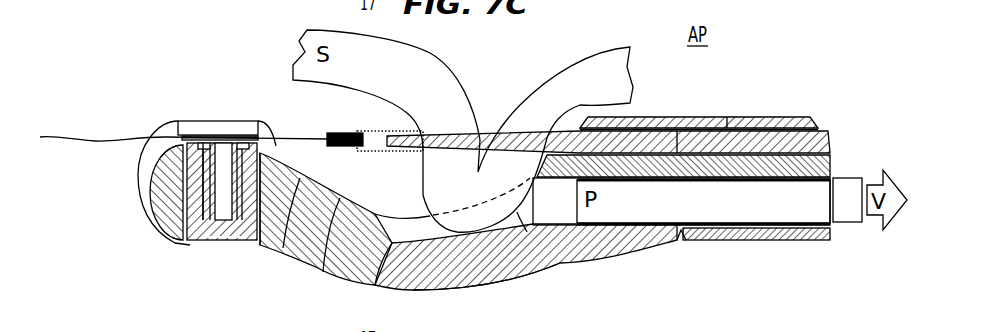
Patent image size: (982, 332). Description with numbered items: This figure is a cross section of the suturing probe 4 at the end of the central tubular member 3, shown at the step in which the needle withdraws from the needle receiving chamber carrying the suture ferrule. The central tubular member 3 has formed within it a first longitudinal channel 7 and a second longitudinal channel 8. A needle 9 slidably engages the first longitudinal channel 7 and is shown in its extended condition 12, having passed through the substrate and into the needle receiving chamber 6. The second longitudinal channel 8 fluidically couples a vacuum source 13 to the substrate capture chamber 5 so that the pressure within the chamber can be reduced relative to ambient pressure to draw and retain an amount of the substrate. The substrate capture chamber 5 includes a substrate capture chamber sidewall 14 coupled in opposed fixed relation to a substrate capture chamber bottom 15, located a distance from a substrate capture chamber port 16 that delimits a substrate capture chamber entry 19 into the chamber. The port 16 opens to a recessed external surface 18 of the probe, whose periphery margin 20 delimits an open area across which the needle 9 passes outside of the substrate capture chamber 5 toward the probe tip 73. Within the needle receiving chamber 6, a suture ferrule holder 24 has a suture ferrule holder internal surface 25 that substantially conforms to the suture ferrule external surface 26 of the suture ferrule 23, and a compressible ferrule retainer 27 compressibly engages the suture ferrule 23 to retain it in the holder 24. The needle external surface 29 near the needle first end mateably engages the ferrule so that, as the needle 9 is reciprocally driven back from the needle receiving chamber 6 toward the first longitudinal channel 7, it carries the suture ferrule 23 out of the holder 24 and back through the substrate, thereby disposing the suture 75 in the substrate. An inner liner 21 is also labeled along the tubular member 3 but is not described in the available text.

The suturing probe 4 is at (60, 61).
The suture 75 is at (70, 137).
The suture ferrule holder internal surface 25 is at (188, 127).
The needle receiving chamber 6 is at (212, 98).
The periphery margin 20 is at (258, 127).
The suture ferrule 23 is at (333, 137).
The suture ferrule external surface 26 is at (420, 138).
The first longitudinal channel 7 is at (677, 104).
The needle 9 is at (608, 97).
The extended condition 12 is at (759, 118).
The needle external surface 29 is at (788, 127).
The inner liner 21 is at (813, 150).
The vacuum source 13 is at (847, 200).
The probe tip 73 is at (137, 172).
The suture ferrule holder 24 is at (172, 165).
The compressible ferrule retainer 27 is at (200, 213).
The recessed external surface 18 is at (285, 247).
The substrate capture chamber port 16 is at (331, 272).
The substrate capture chamber 5 is at (380, 255).
The substrate capture chamber entry 19 is at (371, 214).
The substrate capture chamber bottom 15 is at (527, 277).
The substrate capture chamber sidewall 14 is at (563, 267).
The second longitudinal channel 8 is at (644, 245).
The central tubular member 3 is at (782, 256).